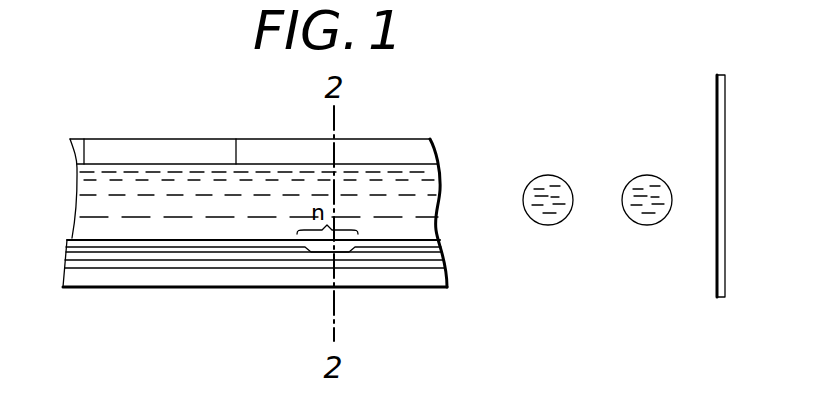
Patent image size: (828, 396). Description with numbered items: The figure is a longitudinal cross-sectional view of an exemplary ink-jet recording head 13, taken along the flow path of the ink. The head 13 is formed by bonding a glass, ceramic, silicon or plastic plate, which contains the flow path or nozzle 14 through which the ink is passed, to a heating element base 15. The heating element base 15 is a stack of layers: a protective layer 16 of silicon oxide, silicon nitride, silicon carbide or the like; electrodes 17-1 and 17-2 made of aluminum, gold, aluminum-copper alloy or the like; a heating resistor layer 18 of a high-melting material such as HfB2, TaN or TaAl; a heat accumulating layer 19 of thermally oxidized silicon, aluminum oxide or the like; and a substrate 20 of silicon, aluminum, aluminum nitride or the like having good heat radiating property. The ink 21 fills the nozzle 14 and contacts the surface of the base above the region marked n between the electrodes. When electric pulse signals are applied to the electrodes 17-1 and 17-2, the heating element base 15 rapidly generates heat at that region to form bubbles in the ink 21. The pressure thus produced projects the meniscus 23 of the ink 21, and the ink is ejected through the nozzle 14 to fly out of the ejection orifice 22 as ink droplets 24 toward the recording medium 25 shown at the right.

The head 13 is at (183, 139).
The flow path (nozzle) 14 is at (240, 164).
The heating element base 15 is at (60, 237).
The protective layer 16 is at (115, 245).
The electrode 17-1 is at (173, 247).
The electrode 17-2 is at (427, 255).
The heating resistor layer 18 is at (242, 258).
The heat accumulating layer 19 is at (293, 262).
The substrate 20 is at (370, 278).
The ink 21 is at (93, 170).
The ejection orifice 22 is at (458, 223).
The meniscus 23 is at (440, 192).
The ink droplets 24 is at (677, 164).
The recording medium 25 is at (717, 157).